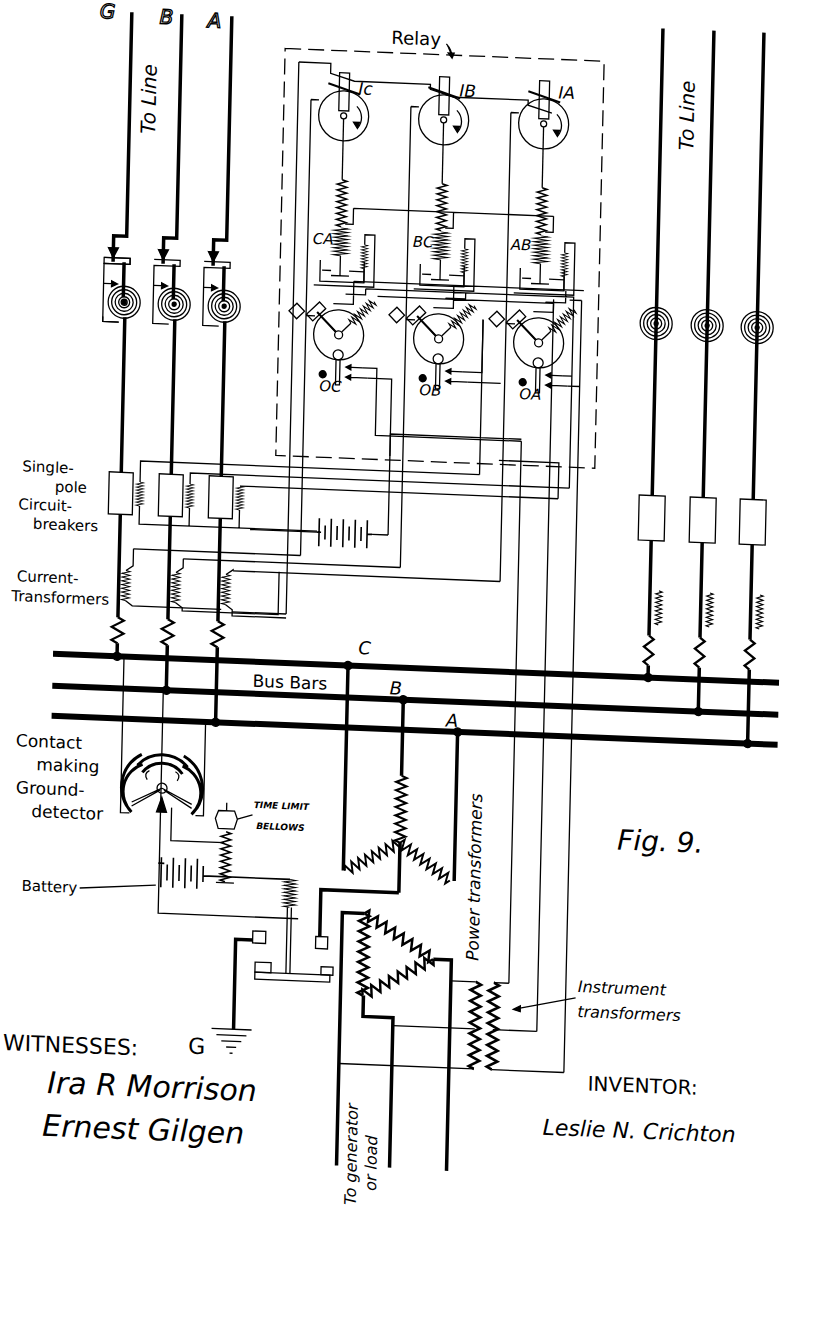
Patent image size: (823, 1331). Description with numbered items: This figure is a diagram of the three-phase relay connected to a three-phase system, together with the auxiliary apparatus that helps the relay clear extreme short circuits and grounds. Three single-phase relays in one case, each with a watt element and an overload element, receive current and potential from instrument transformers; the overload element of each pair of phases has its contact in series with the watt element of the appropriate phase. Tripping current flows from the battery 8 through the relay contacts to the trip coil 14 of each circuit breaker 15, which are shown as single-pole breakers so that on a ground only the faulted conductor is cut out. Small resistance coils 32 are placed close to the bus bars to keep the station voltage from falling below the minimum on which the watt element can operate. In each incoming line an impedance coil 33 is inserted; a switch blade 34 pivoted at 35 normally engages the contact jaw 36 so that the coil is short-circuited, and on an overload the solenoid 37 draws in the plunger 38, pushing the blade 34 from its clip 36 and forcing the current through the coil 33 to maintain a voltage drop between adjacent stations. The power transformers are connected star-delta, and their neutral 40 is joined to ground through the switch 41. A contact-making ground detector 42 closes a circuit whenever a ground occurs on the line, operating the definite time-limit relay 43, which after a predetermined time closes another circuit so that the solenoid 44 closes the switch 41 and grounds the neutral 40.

The battery 8 is at (345, 522).
The trip coil 14 is at (151, 472).
The circuit breaker 15 is at (170, 495).
The resistance coil 32 is at (149, 631).
The impedance coil 33 is at (127, 300).
The switch blade 34 is at (115, 287).
The pivot 35 is at (110, 317).
The contact jaw 36 is at (110, 258).
The solenoid 37 is at (124, 250).
The plunger 38 is at (124, 273).
The neutral of the power transformers 40 is at (424, 824).
The switch 41 is at (305, 970).
The contact-making ground detector 42 is at (157, 822).
The definite time-limit relay 43 is at (249, 850).
The solenoid 44 is at (312, 866).